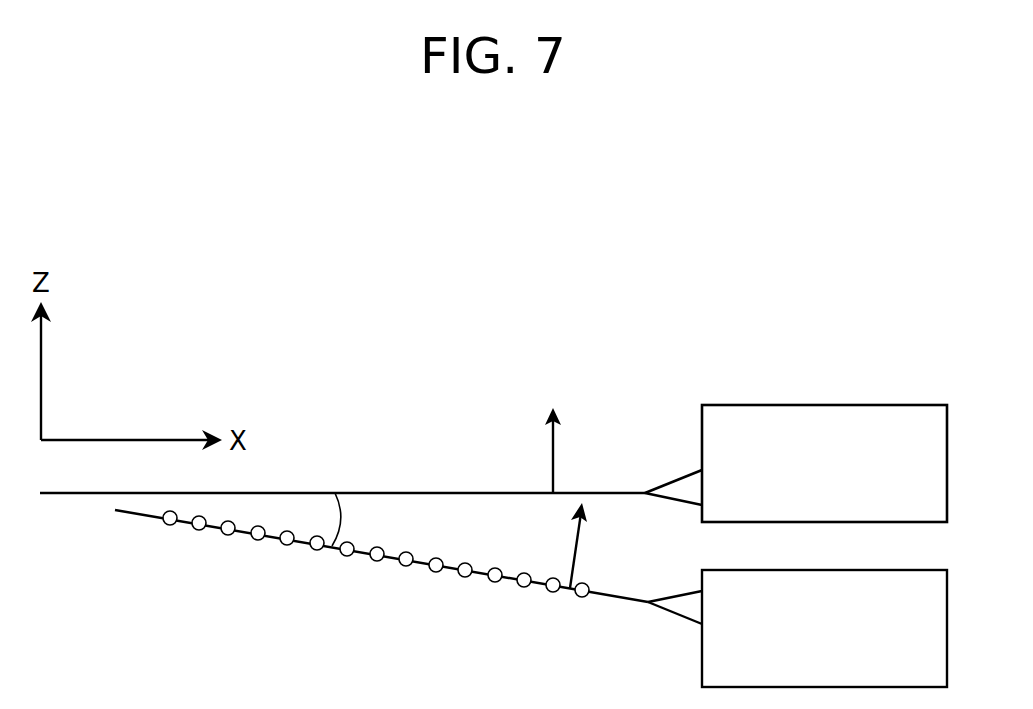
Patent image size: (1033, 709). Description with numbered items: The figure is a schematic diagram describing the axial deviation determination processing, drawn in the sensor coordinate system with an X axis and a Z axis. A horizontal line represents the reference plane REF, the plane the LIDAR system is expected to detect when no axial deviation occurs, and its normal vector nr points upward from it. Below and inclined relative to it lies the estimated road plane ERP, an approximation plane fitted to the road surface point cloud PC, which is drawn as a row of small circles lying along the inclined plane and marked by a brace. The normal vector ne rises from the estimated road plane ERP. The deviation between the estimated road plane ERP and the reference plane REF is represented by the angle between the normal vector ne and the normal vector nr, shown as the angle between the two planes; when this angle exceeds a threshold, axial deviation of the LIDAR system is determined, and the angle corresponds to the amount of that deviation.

The reference plane REF is at (493, 463).
The estimated road plane ERP is at (531, 598).
The road surface point cloud PC is at (592, 603).
The normal vector to the reference plane nr is at (552, 430).
The normal vector to the estimated road plane ne is at (597, 545).